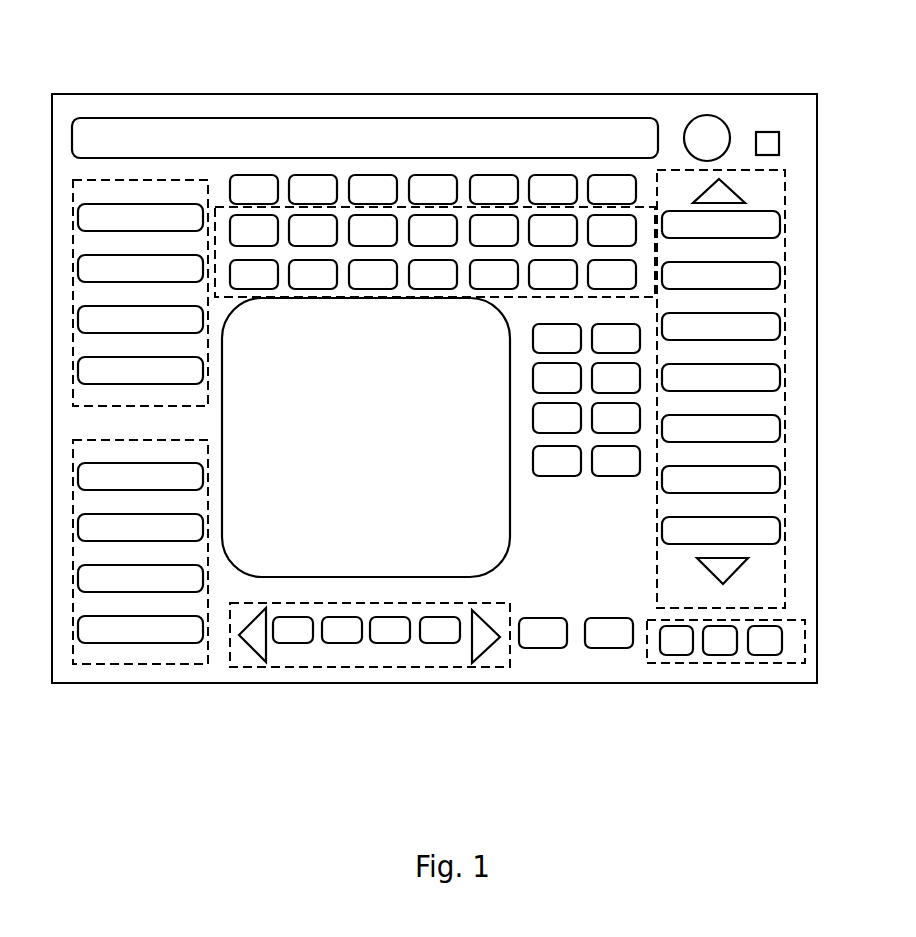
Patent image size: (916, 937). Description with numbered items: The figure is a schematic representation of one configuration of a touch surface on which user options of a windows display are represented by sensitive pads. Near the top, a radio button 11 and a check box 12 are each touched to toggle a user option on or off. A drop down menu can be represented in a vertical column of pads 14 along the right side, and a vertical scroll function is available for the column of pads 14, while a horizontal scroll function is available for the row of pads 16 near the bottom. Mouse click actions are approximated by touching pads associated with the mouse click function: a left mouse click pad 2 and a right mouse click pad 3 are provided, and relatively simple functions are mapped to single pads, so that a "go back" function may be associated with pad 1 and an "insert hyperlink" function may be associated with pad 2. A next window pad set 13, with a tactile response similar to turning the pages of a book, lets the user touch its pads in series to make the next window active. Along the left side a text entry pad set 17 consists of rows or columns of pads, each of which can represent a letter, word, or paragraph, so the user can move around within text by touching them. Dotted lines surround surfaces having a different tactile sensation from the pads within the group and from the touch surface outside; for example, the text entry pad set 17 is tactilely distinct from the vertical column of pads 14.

The pad 1 is at (253, 183).
The left mouse click pad 2 is at (312, 192).
The right mouse click pad 3 is at (606, 637).
The radio button 11 is at (710, 133).
The check box 12 is at (768, 147).
The next window pad set 13 is at (803, 643).
The vertical column of pads 14 is at (785, 193).
The row of pads 16 is at (282, 667).
The text entry pad set 17 is at (221, 200).